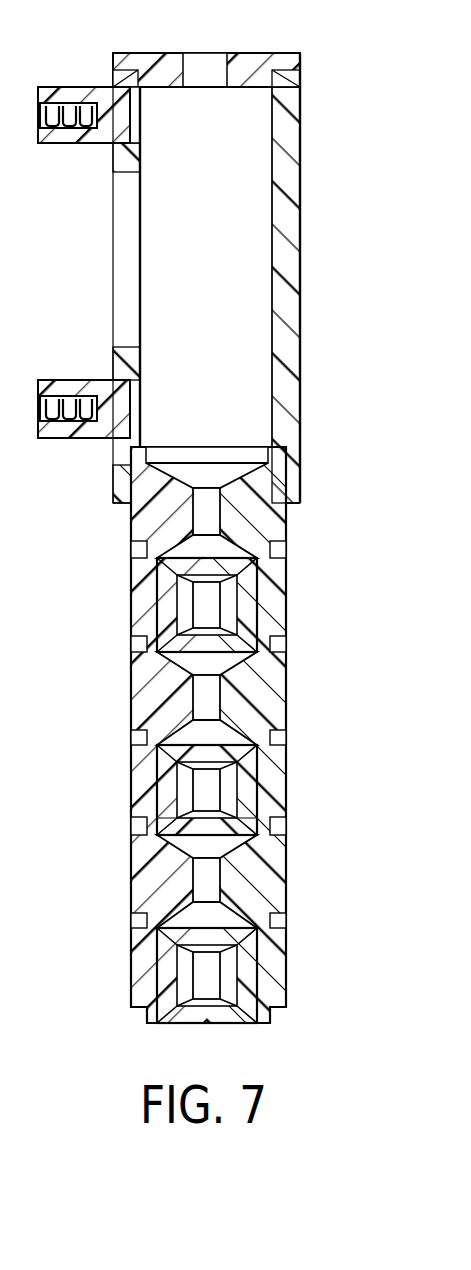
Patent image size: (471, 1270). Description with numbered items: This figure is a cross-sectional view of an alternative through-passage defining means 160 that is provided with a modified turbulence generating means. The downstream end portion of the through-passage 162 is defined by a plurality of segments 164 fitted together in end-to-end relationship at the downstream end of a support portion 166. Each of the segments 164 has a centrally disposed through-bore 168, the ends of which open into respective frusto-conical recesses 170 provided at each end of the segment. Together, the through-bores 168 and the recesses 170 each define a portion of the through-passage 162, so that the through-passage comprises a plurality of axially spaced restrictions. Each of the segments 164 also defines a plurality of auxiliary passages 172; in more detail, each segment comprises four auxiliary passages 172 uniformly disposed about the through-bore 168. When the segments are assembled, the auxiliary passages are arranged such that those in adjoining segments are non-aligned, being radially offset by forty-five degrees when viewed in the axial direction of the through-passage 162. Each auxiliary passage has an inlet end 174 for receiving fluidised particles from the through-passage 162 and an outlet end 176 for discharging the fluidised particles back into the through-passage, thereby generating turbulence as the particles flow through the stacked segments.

The through-passage defining means 160 is at (195, 538).
The through-passage 162 is at (250, 412).
The segments 164 is at (203, 735).
The support portion 166 is at (299, 178).
The through-bore 168 is at (210, 602).
The frusto-conical recesses 170 is at (230, 733).
The auxiliary passages 172 is at (247, 985).
The inlet end 174 is at (230, 740).
The outlet end 176 is at (235, 815).